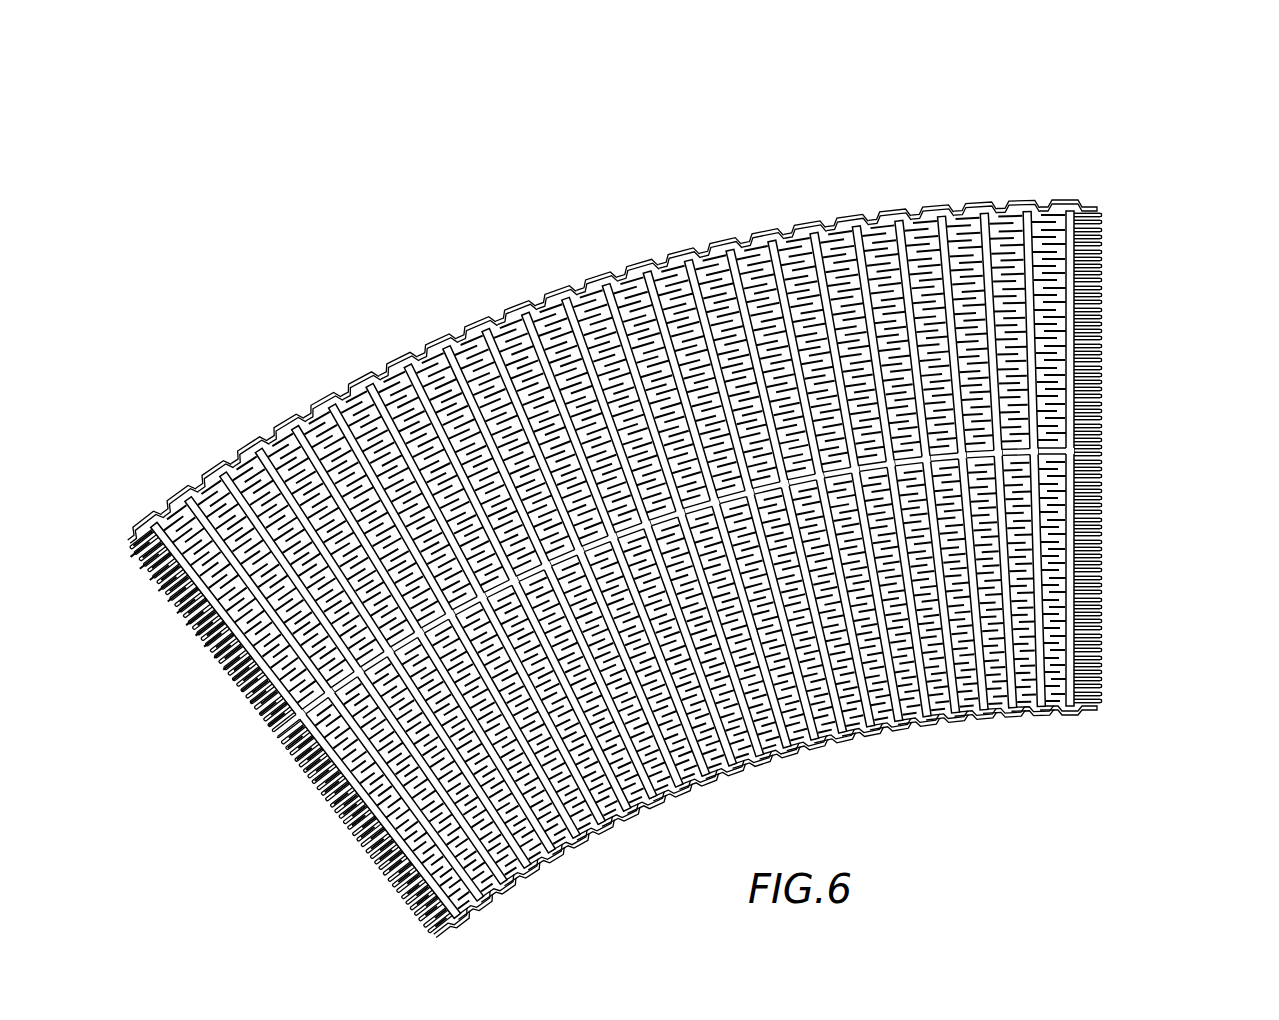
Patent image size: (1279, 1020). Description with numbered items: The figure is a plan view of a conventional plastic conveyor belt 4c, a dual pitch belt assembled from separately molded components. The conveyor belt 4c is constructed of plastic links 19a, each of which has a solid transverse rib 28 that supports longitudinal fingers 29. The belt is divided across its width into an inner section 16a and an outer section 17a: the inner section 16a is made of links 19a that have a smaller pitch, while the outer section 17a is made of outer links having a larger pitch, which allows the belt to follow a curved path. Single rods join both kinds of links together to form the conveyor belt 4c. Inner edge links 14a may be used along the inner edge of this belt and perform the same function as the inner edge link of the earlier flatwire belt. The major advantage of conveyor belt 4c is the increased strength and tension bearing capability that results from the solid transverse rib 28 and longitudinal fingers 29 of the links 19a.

The conveyor belt 4c is at (781, 190).
The inner edge link 14a is at (972, 726).
The inner section 16a is at (1090, 622).
The outer section 17a is at (1098, 325).
The link 19a is at (1062, 272).
The solid transverse rib 28 is at (1036, 392).
The longitudinal finger 29 is at (960, 456).